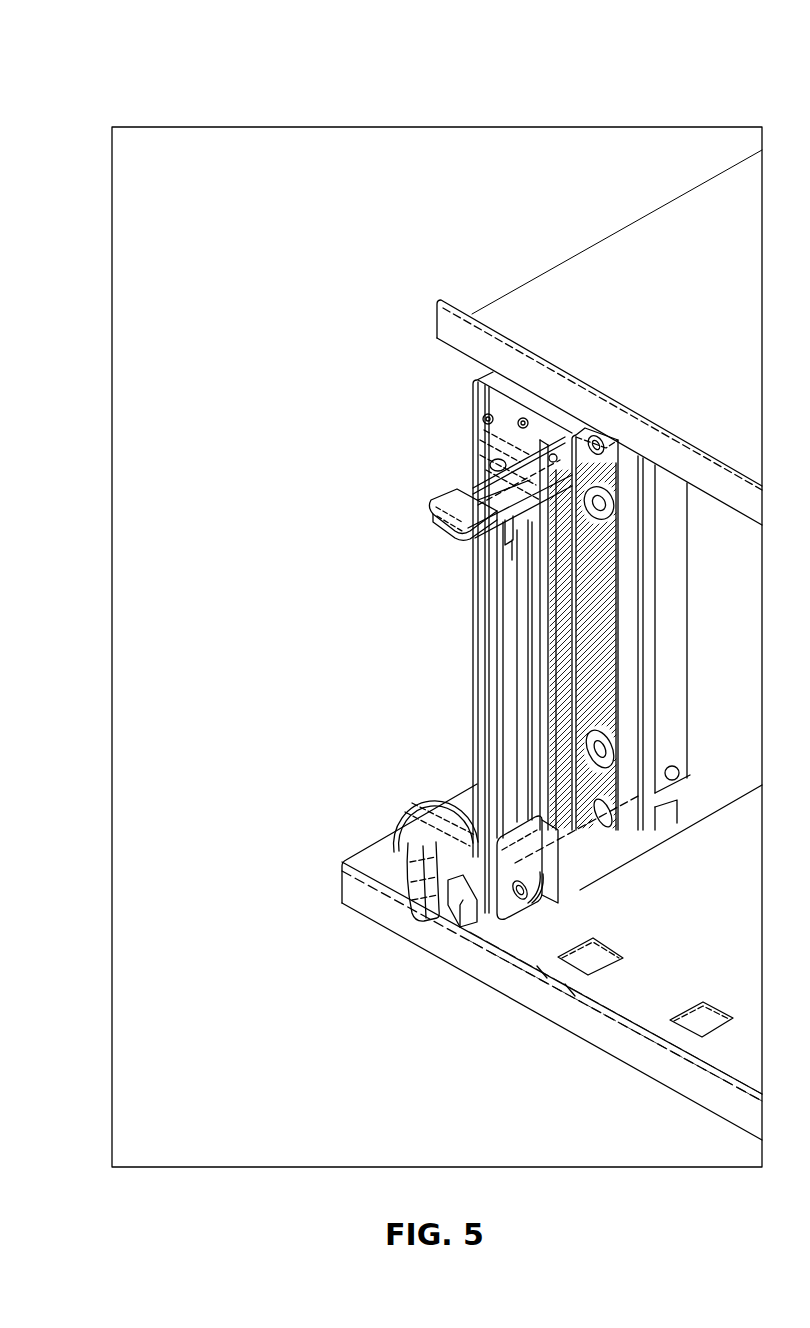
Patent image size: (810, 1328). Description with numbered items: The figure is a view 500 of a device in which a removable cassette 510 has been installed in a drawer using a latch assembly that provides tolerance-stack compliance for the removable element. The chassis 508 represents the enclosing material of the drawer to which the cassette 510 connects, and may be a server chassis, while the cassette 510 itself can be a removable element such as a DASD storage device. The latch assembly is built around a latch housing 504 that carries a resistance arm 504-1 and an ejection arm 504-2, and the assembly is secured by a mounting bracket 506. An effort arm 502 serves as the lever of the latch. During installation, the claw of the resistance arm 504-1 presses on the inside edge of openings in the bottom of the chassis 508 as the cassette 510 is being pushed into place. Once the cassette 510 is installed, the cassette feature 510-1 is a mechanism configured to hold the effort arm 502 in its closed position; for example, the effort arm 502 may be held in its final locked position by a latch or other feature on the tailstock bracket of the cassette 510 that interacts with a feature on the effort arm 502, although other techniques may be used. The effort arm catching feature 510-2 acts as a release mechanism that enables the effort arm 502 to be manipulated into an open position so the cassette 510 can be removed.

The view 500 is at (136, 80).
The effort arm 502 is at (508, 678).
The latch housing 504 is at (423, 805).
The resistance arm 504-1 is at (470, 912).
The ejection arm 504-2 is at (403, 888).
The mounting bracket 506 is at (515, 912).
The chassis 508 is at (540, 952).
The cassette 510 is at (595, 860).
The cassette feature 510-1 is at (448, 502).
The effort arm catching feature 510-2 is at (497, 527).